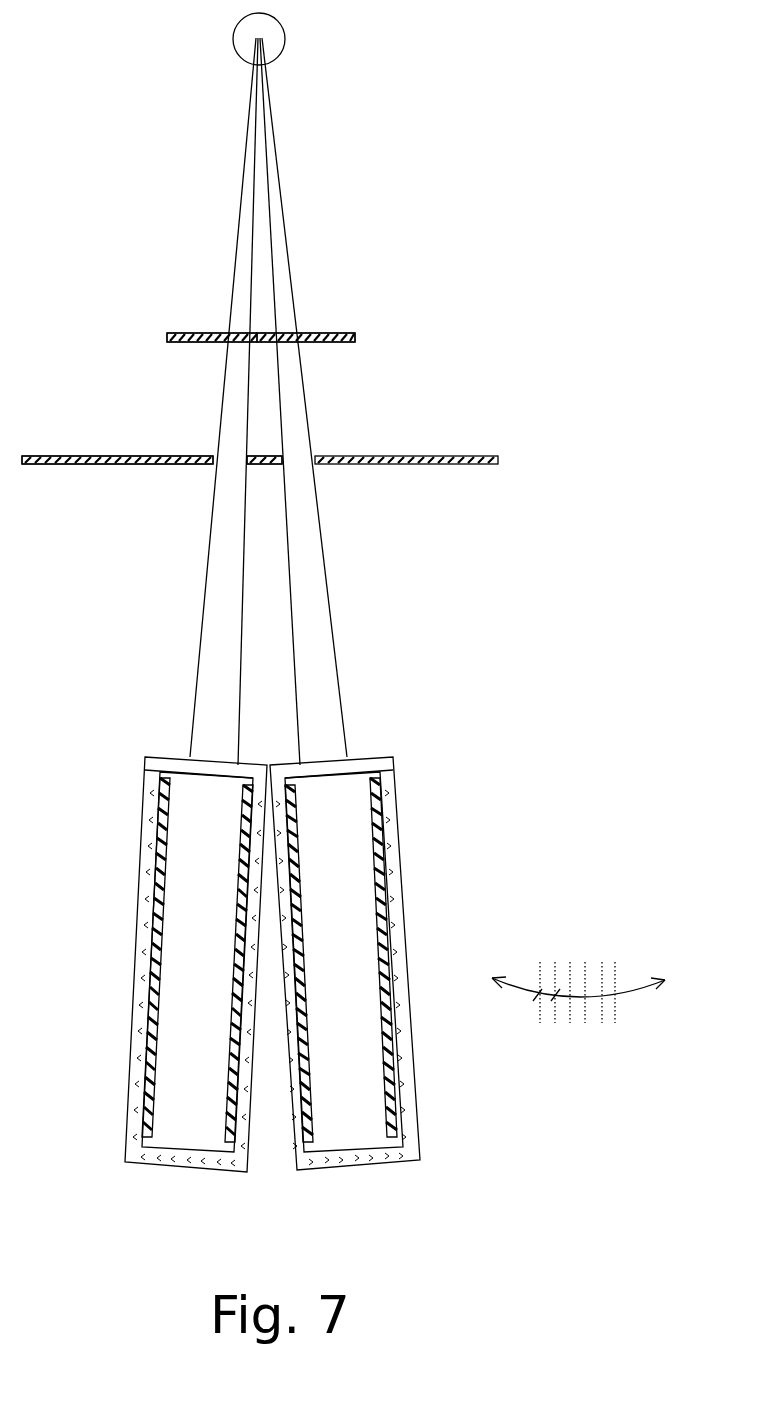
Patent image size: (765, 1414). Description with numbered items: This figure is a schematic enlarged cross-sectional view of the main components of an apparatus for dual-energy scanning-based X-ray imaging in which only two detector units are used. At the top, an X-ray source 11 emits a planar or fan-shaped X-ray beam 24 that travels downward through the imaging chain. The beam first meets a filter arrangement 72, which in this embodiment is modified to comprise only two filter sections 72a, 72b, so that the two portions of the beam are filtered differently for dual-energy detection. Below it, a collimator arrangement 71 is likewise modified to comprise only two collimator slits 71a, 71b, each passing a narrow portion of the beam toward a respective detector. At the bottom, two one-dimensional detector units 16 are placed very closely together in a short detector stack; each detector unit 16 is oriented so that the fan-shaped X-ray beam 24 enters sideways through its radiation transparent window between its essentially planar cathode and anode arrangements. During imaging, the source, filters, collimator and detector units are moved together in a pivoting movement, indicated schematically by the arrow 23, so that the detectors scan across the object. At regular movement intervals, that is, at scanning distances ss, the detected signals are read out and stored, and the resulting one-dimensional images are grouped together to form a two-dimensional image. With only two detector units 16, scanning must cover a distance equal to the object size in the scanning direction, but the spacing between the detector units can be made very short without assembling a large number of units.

The X-ray source 11 is at (206, 56).
The fan-shaped X-ray beam 24 is at (285, 218).
The filter arrangement 72 is at (355, 333).
The first filter section 72a is at (200, 350).
The second filter section 72b is at (323, 332).
The collimator arrangement 71 is at (427, 455).
The first collimator slit 71a is at (232, 458).
The second collimator slit 71b is at (300, 458).
The detector unit 16 is at (108, 800).
The arrow indicating pivoting movement 23 is at (628, 987).
The scanning distance ss is at (551, 980).